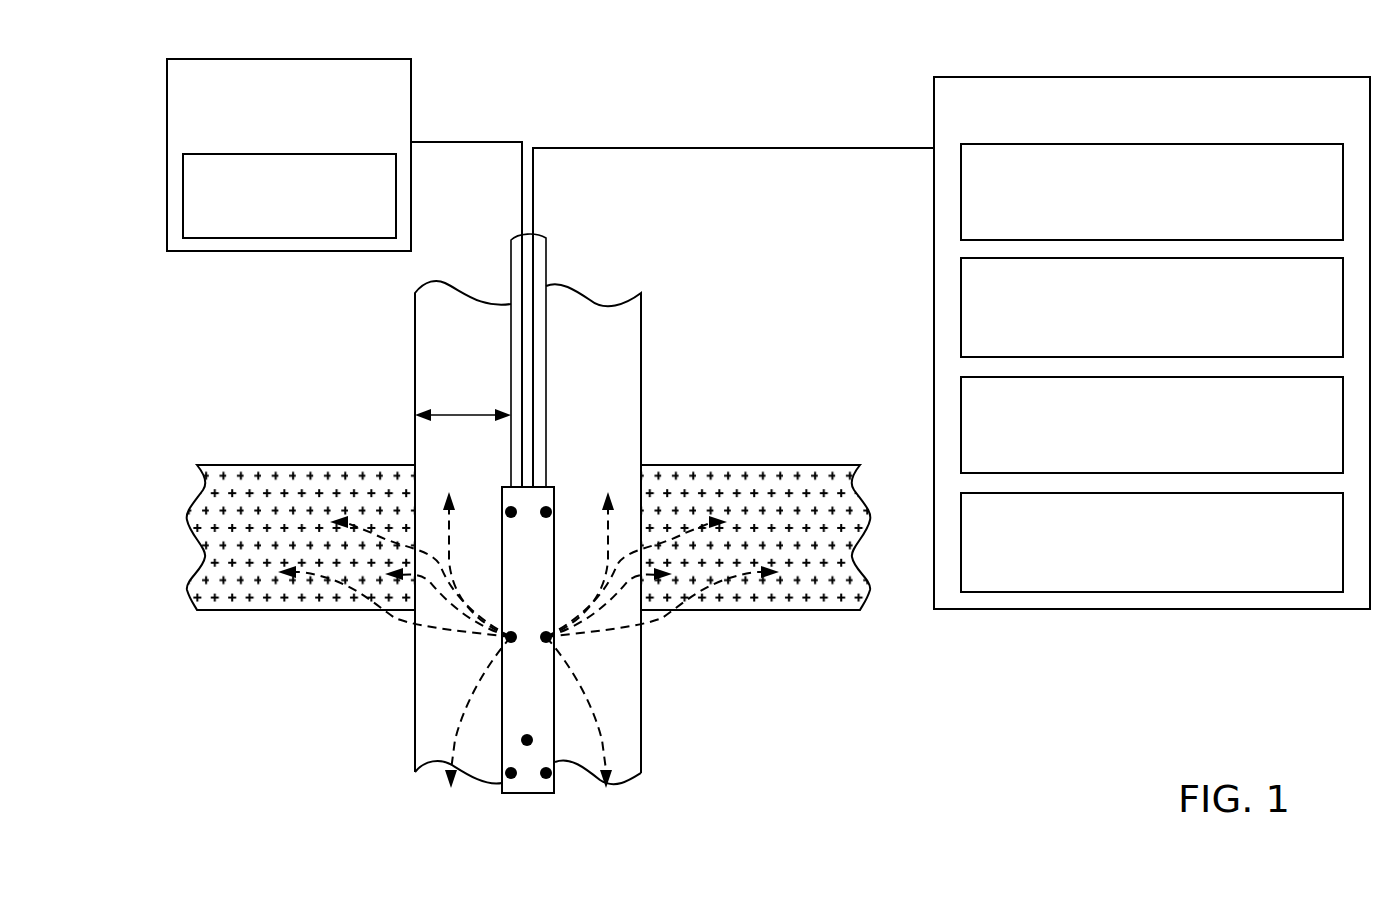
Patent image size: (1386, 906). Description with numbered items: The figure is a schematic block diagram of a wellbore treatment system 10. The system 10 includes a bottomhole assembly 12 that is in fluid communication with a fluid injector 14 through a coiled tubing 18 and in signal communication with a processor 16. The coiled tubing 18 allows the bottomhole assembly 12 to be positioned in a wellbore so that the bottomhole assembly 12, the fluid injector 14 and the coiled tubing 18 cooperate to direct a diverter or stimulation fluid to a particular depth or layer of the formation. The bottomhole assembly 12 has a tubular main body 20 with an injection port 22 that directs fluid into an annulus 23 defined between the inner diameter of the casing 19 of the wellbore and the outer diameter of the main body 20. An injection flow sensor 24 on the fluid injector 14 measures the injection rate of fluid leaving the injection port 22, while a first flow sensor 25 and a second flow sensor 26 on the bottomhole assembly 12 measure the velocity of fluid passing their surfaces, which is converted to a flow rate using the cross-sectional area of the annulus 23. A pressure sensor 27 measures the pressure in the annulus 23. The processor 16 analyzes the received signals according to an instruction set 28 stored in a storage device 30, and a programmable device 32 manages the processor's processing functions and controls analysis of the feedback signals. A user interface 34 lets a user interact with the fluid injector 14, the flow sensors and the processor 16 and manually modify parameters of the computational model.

The wellbore treatment system 10 is at (996, 718).
The bottomhole assembly 12 is at (499, 478).
The fluid injector 14 is at (233, 59).
The processor 16 is at (1000, 77).
The coiled tubing 18 is at (546, 363).
The casing 19 is at (641, 410).
The tubular main body 20 is at (555, 568).
The injection port 22 is at (546, 632).
The annulus 23 is at (463, 412).
The injection flow sensor 24 is at (183, 178).
The first flow sensor 25 is at (512, 508).
The second flow sensor 26 is at (546, 779).
The pressure sensor 27 is at (533, 740).
The instruction set 28 is at (961, 194).
The storage device 30 is at (961, 309).
The programmable device 32 is at (961, 426).
The user interface 34 is at (961, 542).